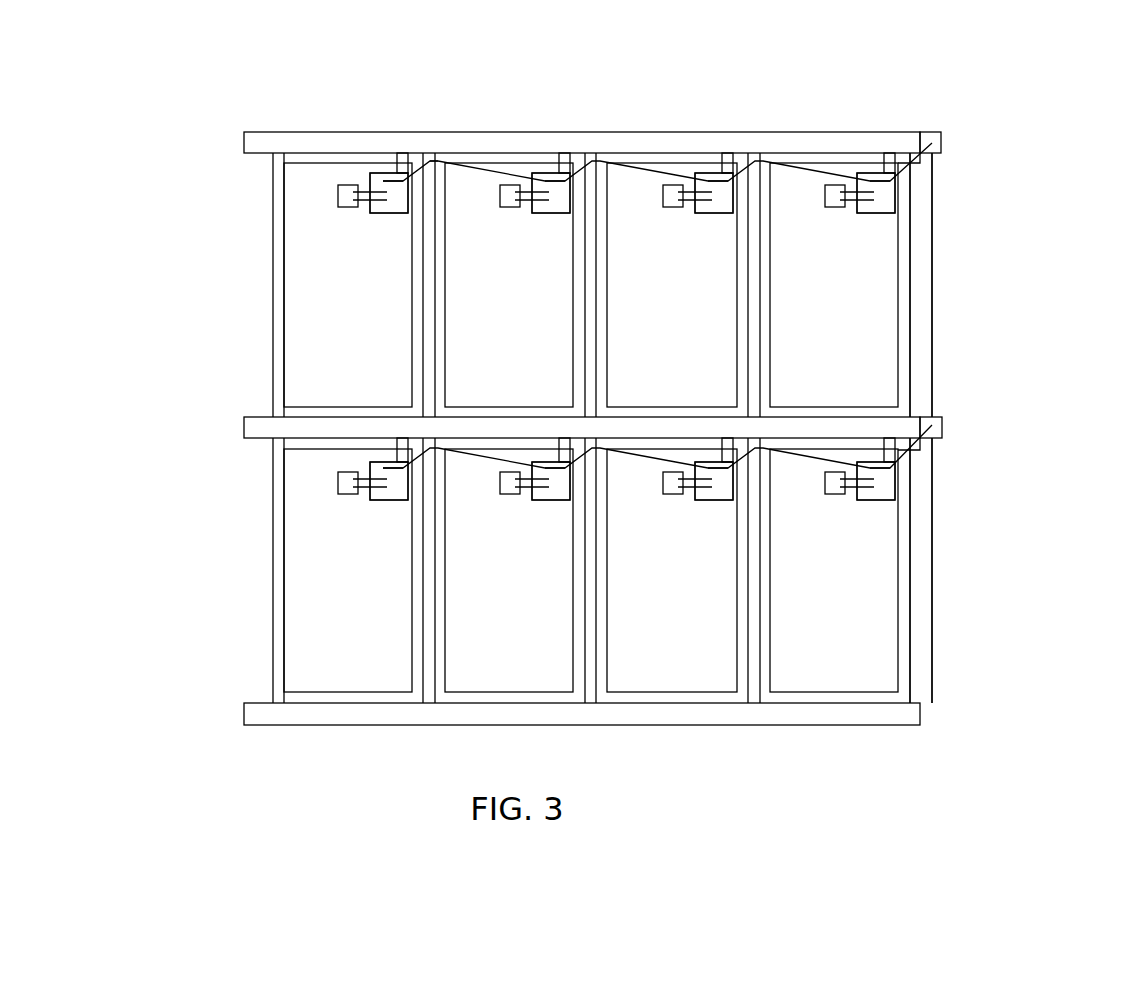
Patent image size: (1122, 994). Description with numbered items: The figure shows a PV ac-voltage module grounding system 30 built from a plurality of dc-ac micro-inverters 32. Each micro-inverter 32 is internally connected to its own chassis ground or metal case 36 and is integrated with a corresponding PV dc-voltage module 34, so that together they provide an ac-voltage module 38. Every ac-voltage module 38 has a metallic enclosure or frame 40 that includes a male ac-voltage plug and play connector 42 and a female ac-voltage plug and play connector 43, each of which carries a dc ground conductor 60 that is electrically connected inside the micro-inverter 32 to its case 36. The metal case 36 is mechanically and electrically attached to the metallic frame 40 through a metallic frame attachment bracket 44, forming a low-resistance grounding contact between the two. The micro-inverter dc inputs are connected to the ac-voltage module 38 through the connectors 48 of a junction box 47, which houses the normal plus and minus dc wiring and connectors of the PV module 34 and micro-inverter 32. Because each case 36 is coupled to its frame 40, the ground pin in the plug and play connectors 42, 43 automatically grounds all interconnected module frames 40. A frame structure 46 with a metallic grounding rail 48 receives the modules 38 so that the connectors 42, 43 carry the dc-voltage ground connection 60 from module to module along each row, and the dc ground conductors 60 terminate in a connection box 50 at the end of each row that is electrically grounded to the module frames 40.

The PV ac-voltage module grounding system 30 is at (1007, 66).
The dc-ac micro-inverter 32 is at (372, 222).
The PV dc-voltage module 34 is at (329, 373).
The micro-inverter case 36 is at (398, 215).
The ac-voltage module 38 is at (272, 288).
The metallic frame 40 is at (428, 259).
The male ac-voltage plug and play connector 42 is at (432, 160).
The female ac-voltage plug and play connector 43 is at (442, 162).
The metallic frame attachment bracket 44 is at (400, 152).
The frame structure 46 is at (738, 130).
The junction box 47 is at (340, 201).
The metallic grounding rail 48 is at (630, 131).
The connection box 50 is at (933, 132).
The dc ground conductor 60 is at (385, 178).